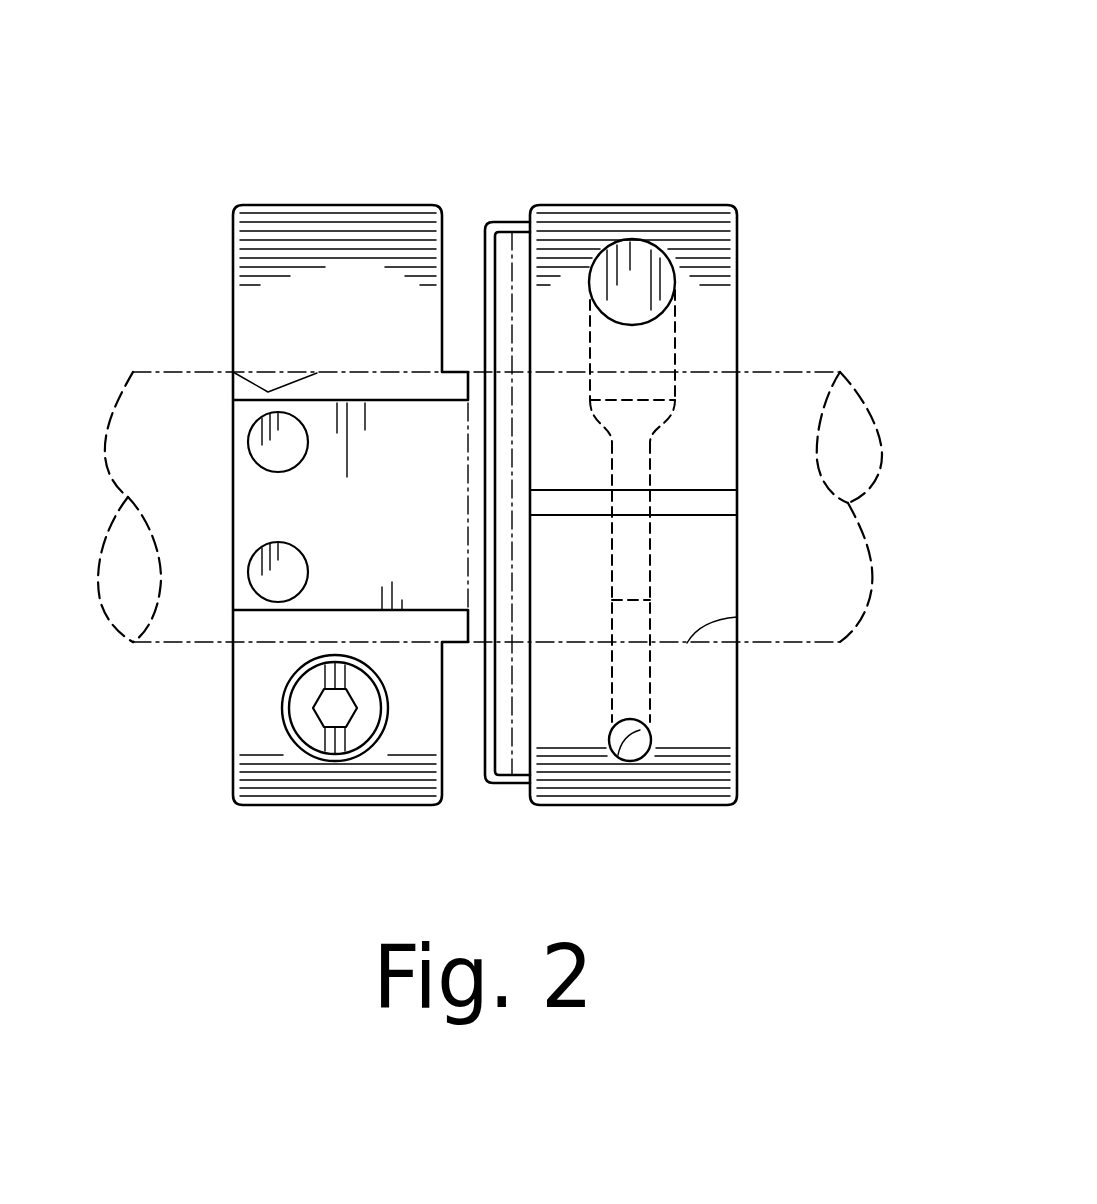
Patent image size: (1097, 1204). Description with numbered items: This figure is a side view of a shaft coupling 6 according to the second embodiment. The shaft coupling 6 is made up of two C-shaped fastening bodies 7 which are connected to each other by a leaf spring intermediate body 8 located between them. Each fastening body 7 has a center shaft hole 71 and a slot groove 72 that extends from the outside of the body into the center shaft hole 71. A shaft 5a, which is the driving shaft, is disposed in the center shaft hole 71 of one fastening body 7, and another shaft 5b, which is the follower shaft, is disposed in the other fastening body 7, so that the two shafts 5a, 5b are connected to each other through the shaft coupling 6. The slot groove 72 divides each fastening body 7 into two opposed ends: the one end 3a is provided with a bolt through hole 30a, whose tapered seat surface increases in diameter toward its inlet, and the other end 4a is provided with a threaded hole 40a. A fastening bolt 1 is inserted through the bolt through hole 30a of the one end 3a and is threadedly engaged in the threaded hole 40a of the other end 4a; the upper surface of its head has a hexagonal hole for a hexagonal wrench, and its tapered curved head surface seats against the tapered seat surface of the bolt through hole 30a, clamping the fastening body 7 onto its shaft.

The shaft coupling 6 is at (708, 178).
The fastening body 7 is at (323, 258).
The leaf spring intermediate body 8 is at (507, 227).
The shaft 5a is at (163, 372).
The shaft 5b is at (797, 372).
The center shaft hole 71 is at (220, 368).
The one end 3a is at (692, 455).
The slot groove 72 is at (693, 500).
The other end 4a is at (700, 572).
The bolt through hole 30a is at (672, 280).
The fastening bolt 1 is at (662, 403).
The threaded hole 40a is at (653, 740).